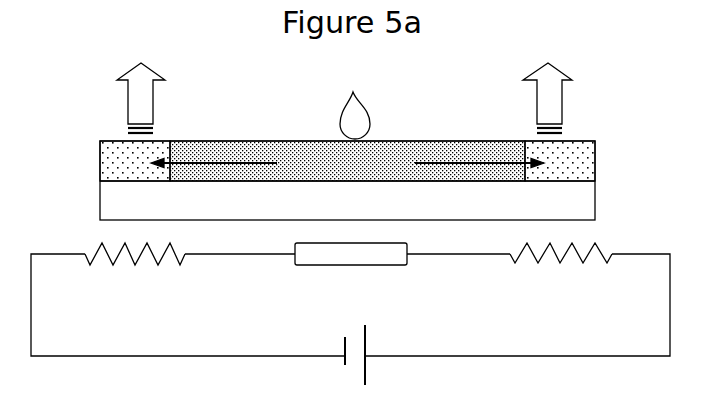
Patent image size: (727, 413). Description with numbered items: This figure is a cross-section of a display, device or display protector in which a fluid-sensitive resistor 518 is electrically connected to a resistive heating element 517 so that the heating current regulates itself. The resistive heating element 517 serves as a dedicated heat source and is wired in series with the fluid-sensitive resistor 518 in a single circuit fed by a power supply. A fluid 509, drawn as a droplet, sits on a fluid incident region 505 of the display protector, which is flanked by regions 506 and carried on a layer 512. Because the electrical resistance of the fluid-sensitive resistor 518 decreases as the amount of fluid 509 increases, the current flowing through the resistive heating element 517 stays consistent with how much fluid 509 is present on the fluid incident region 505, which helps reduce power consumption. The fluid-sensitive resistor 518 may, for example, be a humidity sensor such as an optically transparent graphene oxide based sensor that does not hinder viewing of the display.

The fluid incident region 505 is at (428, 150).
The hydrophilic edge regions 506 is at (115, 163).
The fluid 509 is at (353, 117).
The substrate 512 is at (577, 195).
The resistive heating element 517 is at (142, 278).
The fluid-sensitive resistor 518 is at (362, 255).